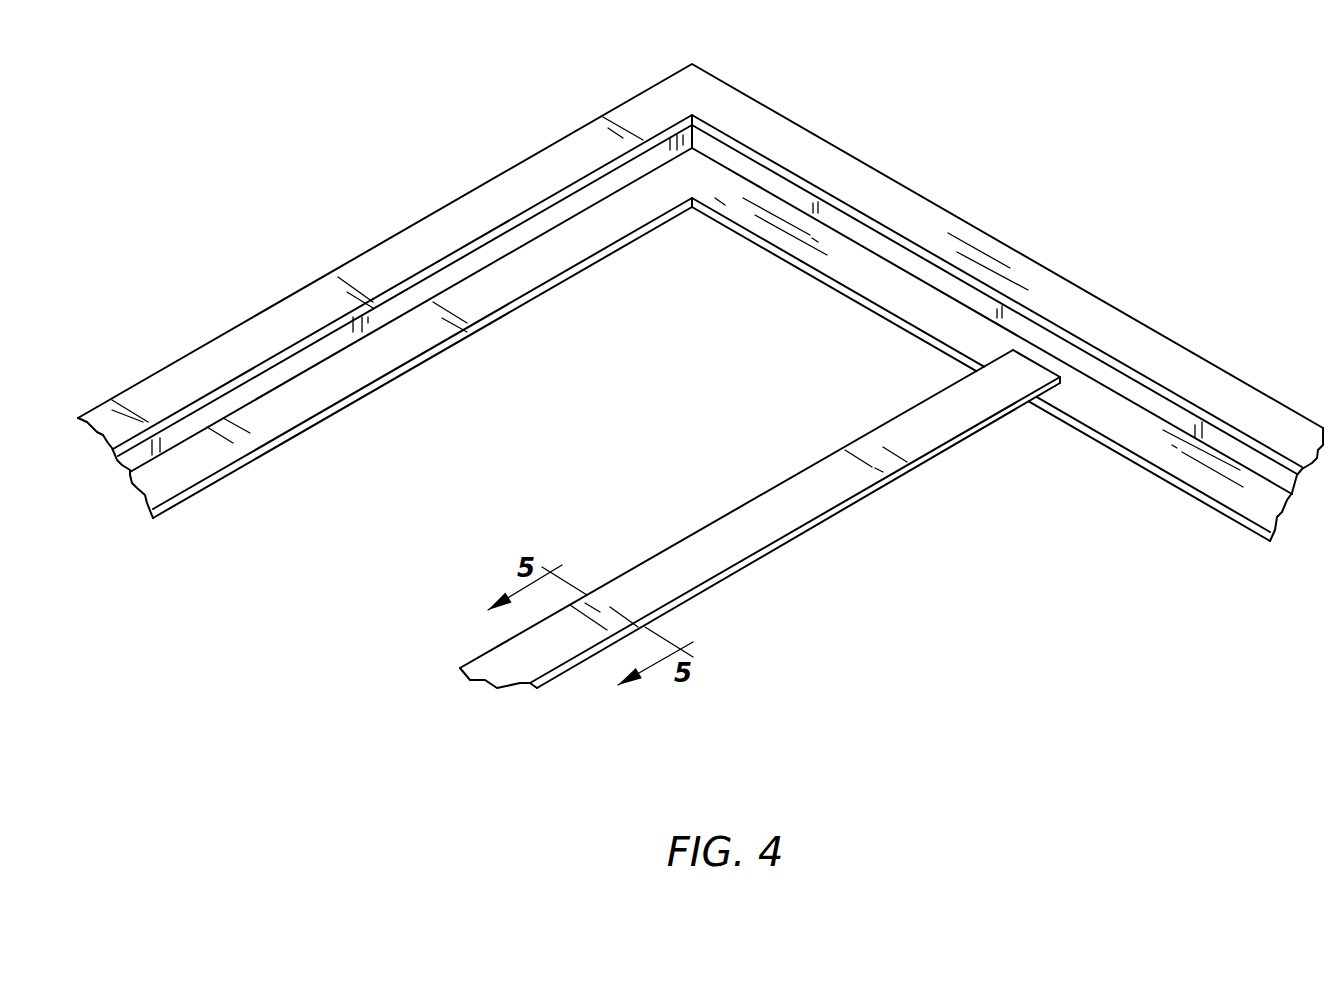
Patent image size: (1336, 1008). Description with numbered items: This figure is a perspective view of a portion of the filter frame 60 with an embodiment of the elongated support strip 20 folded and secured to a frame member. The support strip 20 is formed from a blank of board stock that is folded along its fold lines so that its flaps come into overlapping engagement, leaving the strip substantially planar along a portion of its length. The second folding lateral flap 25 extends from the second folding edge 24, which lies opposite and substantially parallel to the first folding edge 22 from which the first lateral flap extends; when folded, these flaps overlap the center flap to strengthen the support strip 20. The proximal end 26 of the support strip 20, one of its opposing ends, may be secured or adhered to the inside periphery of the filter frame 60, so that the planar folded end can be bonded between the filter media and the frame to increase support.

The elongated support strip 20 is at (760, 519).
The first folding edge 22 is at (736, 509).
The second folding edge 24 is at (877, 498).
The second folding lateral flap 25 is at (755, 527).
The proximal end 26 is at (1036, 366).
The filter frame 60 is at (910, 217).